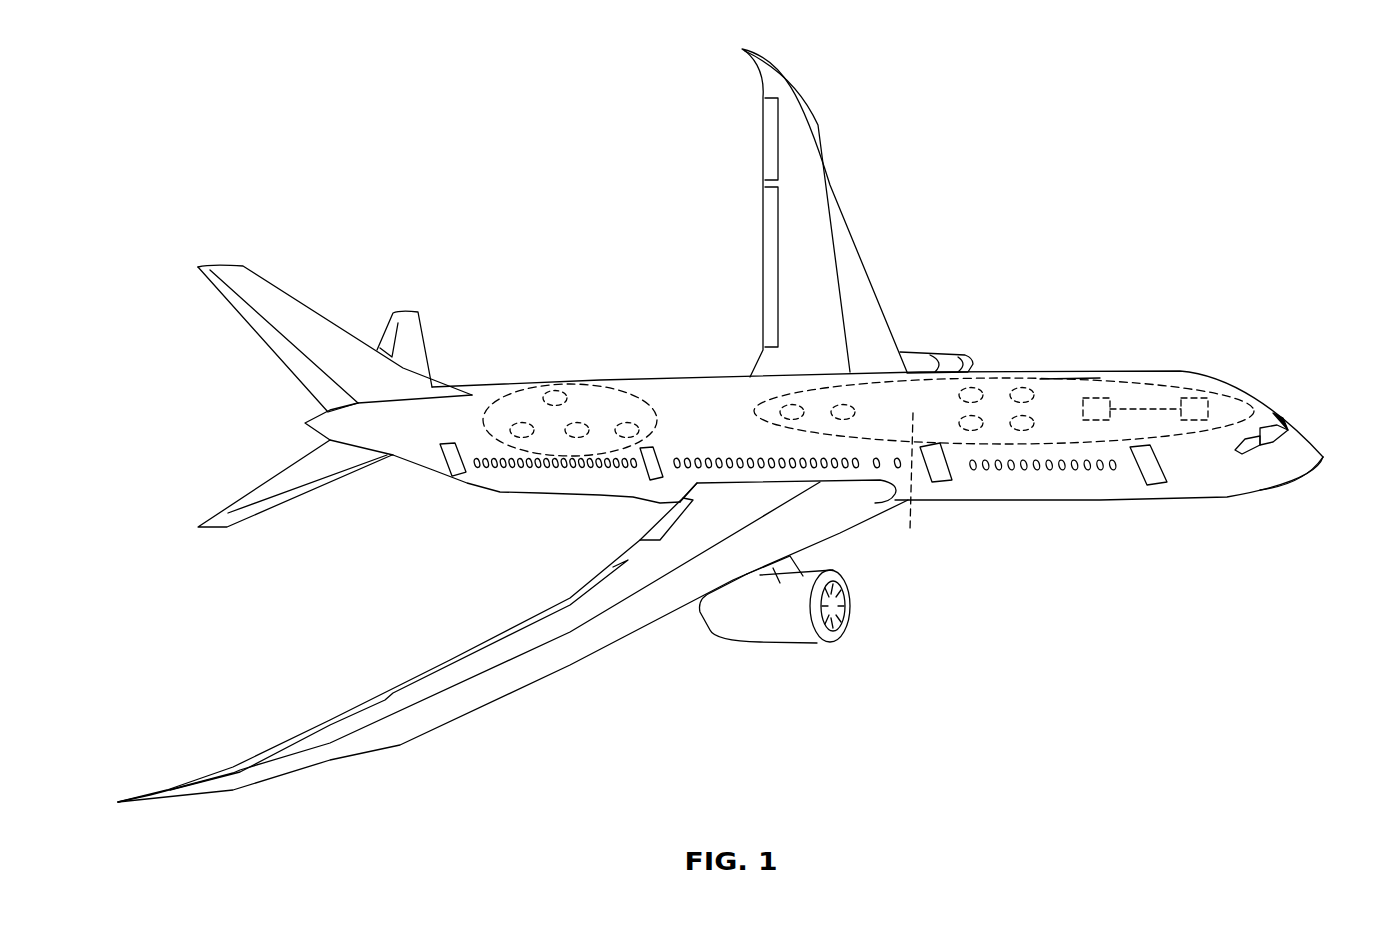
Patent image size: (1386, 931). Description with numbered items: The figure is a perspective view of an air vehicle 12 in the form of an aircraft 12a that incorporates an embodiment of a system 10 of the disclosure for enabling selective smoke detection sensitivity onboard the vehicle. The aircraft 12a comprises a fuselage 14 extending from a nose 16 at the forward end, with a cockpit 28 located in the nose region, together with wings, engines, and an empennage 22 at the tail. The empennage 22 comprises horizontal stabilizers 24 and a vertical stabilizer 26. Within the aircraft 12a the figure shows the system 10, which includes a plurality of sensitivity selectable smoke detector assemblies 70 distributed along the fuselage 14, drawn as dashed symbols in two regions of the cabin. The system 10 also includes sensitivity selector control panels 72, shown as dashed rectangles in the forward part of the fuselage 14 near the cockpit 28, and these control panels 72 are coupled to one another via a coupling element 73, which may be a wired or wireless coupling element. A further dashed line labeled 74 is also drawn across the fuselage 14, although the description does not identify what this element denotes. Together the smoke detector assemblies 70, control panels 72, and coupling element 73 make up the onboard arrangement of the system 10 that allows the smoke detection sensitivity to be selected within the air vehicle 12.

The system 10 is at (753, 405).
The air vehicle 12 is at (1073, 168).
The aircraft 12a is at (1120, 367).
The fuselage 14 is at (1040, 380).
The nose 16 is at (1298, 465).
The empennage 22 is at (182, 290).
The horizontal stabilizers 24 is at (420, 343).
The vertical stabilizer 26 is at (290, 320).
The cockpit 28 is at (1245, 402).
The sensitivity selectable smoke detector assemblies 70 is at (623, 420).
The sensitivity selector control panels 72 is at (1097, 396).
The coupling element 73 is at (1150, 408).
The bulkhead partition 74 is at (918, 489).